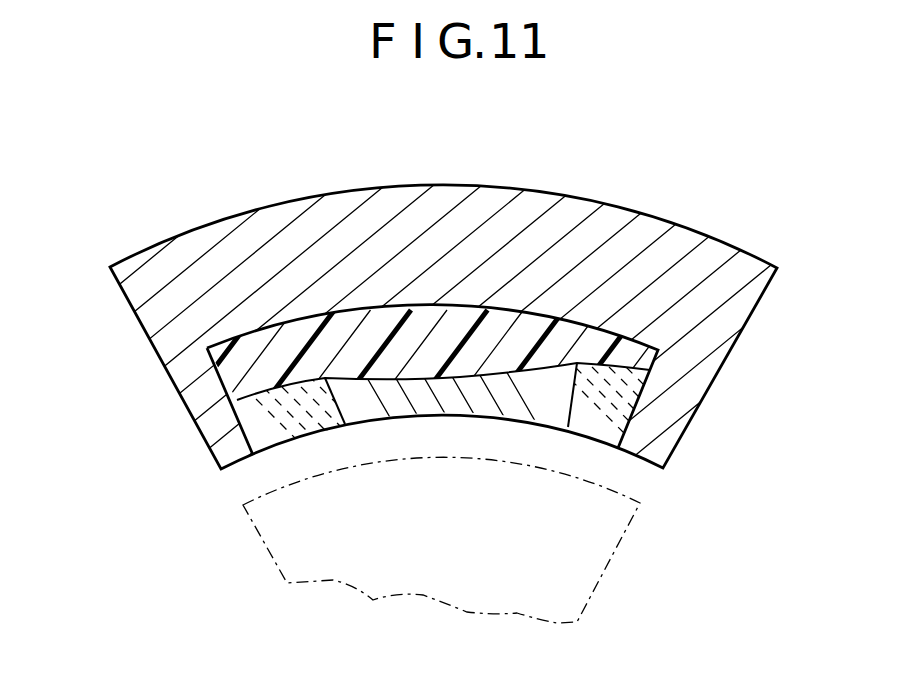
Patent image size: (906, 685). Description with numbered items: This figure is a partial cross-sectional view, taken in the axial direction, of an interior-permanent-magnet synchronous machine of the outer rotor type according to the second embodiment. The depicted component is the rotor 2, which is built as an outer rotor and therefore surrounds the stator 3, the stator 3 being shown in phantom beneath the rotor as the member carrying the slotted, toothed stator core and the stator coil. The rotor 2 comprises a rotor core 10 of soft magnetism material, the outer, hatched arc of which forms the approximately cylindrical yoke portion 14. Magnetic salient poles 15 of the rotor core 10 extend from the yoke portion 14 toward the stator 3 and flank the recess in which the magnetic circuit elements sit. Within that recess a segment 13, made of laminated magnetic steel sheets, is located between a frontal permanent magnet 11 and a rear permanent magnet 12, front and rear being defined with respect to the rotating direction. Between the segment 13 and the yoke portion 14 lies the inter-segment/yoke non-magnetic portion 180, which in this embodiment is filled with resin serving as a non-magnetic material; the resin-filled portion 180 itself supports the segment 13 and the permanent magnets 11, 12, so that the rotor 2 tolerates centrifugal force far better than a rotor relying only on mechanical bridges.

The rotor 2 is at (150, 209).
The rotor core 10 is at (708, 212).
The yoke portion 14 is at (375, 220).
The inter-segment/yoke non-magnetic portion 180 is at (463, 315).
The magnetic salient pole 15 is at (200, 398).
The rear permanent magnet 12 is at (282, 425).
The segment 13 is at (428, 402).
The frontal permanent magnet 11 is at (598, 420).
The stator 3 is at (485, 578).